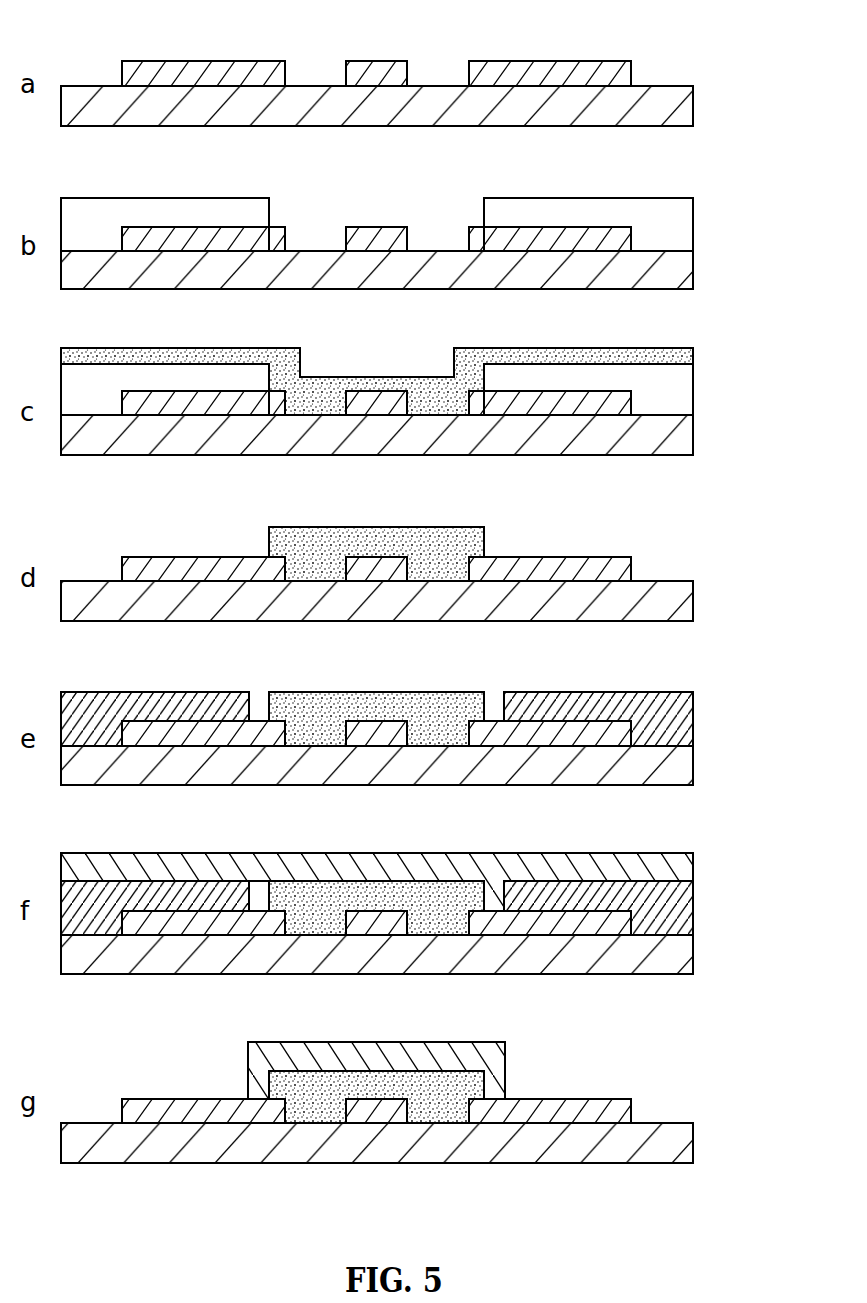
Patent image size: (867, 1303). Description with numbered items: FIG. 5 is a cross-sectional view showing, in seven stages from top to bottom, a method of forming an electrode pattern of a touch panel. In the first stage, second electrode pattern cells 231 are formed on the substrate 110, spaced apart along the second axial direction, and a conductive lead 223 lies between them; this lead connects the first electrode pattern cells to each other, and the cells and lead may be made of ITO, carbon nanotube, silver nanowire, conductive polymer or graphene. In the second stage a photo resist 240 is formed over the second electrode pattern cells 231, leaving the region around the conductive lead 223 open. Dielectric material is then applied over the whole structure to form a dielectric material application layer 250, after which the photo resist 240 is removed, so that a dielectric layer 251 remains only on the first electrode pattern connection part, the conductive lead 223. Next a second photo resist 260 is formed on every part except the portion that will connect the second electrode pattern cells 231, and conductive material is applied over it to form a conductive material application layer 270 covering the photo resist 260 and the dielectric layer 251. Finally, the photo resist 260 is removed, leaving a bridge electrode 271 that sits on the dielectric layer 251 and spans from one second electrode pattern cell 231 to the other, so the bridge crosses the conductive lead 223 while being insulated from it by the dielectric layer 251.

The substrate 110 is at (686, 102).
The second electrode pattern cell 231 is at (216, 70).
The conductive lead 223 is at (375, 70).
The photo resist 240 is at (625, 215).
The dielectric material application layer 250 is at (386, 384).
The dielectric layer 251 is at (443, 535).
The photo resist 260 is at (616, 700).
The conductive material application layer 270 is at (453, 865).
The bridge electrode 271 is at (453, 1052).